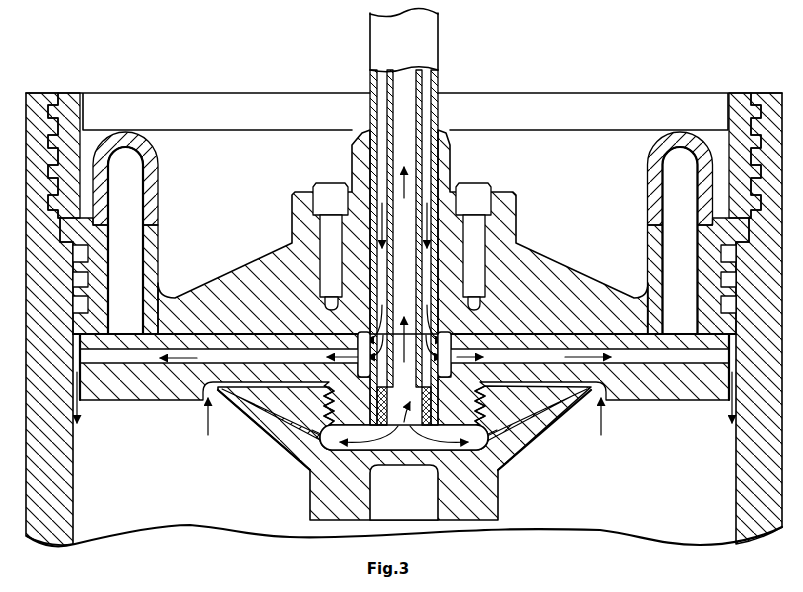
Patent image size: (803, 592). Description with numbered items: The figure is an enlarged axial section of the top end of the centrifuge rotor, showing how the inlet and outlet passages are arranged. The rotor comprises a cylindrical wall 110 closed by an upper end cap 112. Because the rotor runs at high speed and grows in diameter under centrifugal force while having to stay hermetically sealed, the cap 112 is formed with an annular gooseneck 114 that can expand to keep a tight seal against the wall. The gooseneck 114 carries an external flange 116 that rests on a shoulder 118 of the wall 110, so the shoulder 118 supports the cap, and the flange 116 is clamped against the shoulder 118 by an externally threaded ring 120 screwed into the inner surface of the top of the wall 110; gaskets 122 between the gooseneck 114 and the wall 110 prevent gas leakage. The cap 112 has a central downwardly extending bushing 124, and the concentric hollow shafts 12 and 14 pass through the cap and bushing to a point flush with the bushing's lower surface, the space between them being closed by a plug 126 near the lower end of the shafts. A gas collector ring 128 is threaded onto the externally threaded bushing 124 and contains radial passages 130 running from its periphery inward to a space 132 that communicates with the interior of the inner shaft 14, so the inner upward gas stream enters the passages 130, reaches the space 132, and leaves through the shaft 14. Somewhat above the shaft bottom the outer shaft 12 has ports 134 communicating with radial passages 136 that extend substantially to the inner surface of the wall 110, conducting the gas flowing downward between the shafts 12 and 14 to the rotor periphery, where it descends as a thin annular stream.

The outer shaft 12 is at (438, 70).
The inner shaft 14 is at (423, 137).
The cylindrical wall 110 is at (70, 475).
The upper end cap 112 is at (233, 278).
The annular gooseneck 114 is at (158, 205).
The external flange 116 is at (63, 226).
The shoulder 118 is at (107, 199).
The externally threaded ring 120 is at (65, 100).
The gaskets 122 is at (85, 307).
The bushing 124 is at (489, 457).
The plug 126 is at (508, 472).
The gas collector ring 128 is at (263, 427).
The radial passages 130 is at (501, 424).
The space 132 is at (357, 438).
The ports 134 is at (443, 333).
The radial passages 136 is at (640, 358).